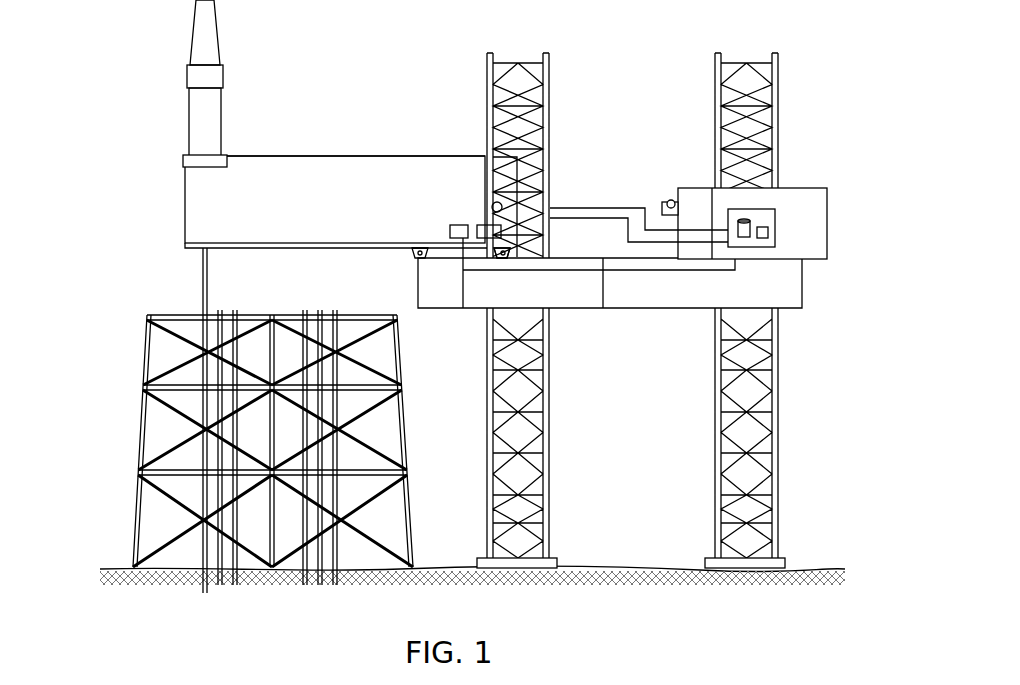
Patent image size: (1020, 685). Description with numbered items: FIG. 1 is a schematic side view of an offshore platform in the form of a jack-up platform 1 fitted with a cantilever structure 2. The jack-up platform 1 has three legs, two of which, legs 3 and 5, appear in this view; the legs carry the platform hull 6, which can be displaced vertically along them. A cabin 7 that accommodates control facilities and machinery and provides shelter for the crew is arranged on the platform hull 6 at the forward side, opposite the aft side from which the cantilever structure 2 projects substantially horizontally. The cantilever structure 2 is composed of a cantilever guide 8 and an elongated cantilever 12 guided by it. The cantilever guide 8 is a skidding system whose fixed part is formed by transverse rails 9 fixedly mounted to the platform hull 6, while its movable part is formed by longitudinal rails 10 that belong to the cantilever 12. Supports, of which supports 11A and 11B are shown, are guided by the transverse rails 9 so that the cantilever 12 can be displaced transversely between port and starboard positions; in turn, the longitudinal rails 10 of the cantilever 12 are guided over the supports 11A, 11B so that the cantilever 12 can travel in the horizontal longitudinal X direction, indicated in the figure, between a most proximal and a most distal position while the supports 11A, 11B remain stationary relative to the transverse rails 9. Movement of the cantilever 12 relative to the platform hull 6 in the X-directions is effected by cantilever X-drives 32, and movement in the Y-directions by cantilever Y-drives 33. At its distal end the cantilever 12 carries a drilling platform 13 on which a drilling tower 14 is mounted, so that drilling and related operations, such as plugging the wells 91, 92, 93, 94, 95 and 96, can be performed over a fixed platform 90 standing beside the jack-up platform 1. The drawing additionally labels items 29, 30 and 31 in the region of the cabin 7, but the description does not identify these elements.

The jack-up platform 1 is at (808, 60).
The cantilever structure 2 is at (365, 93).
The leg 3 is at (549, 70).
The leg 5 is at (778, 98).
The platform hull 6 is at (632, 320).
The cabin 7 is at (800, 245).
The cantilever guide 8 is at (398, 258).
The transverse rails 9 is at (415, 258).
The longitudinal rails 10 is at (292, 245).
The support 11A is at (420, 258).
The support 11B is at (498, 258).
The cantilever 12 is at (314, 152).
The drilling platform 13 is at (188, 162).
The drilling tower 14 is at (216, 105).
The control box 29 is at (773, 215).
The sensor 30 is at (763, 238).
The actuator 31 is at (745, 238).
The cantilever X-drive 32 is at (493, 225).
The cantilever Y-drive 33 is at (458, 225).
The fixed platform 90 is at (126, 352).
The well 91 is at (207, 492).
The well 92 is at (220, 555).
The well 93 is at (235, 527).
The well 94 is at (302, 530).
The well 95 is at (320, 495).
The well 96 is at (337, 555).